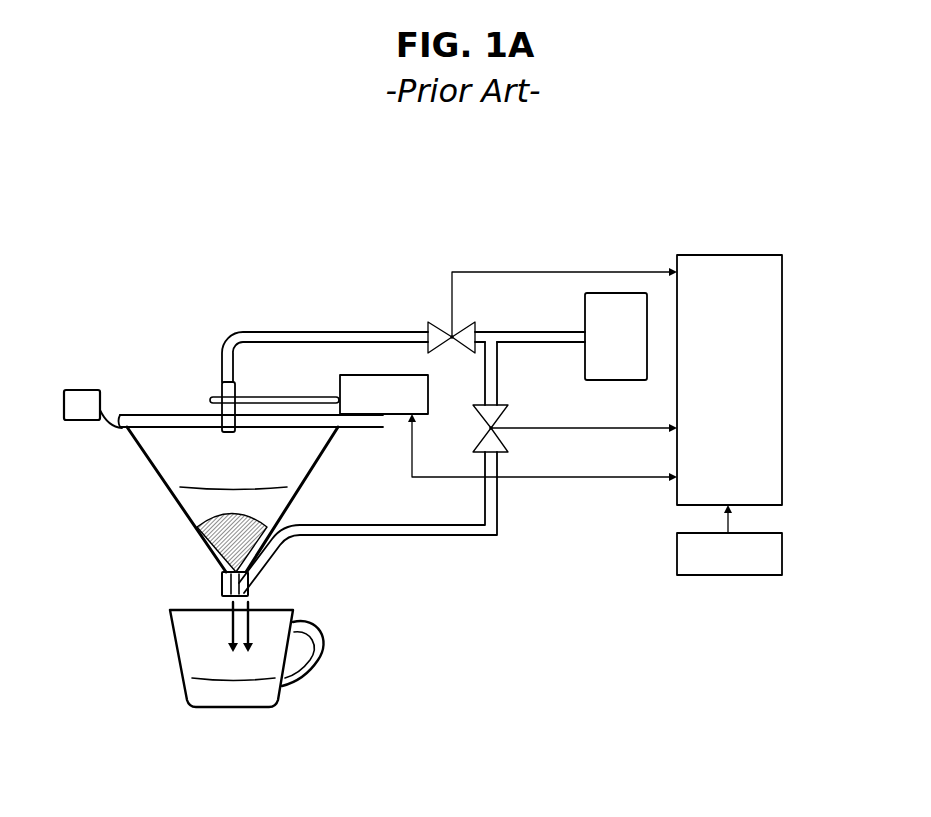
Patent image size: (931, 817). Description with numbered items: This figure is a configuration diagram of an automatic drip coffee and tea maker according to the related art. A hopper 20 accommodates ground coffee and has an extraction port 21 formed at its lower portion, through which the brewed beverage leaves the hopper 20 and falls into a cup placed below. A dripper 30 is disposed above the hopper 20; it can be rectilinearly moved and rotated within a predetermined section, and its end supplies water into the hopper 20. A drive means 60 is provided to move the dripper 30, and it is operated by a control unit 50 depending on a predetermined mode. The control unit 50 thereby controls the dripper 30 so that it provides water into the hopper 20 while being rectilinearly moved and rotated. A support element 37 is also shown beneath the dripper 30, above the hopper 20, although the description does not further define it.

The dripper 30 is at (140, 268).
The support plate 37 is at (160, 415).
The hopper 20 is at (153, 468).
The extraction port 21 is at (220, 577).
The drive means 60 is at (392, 415).
The control unit 50 is at (781, 300).